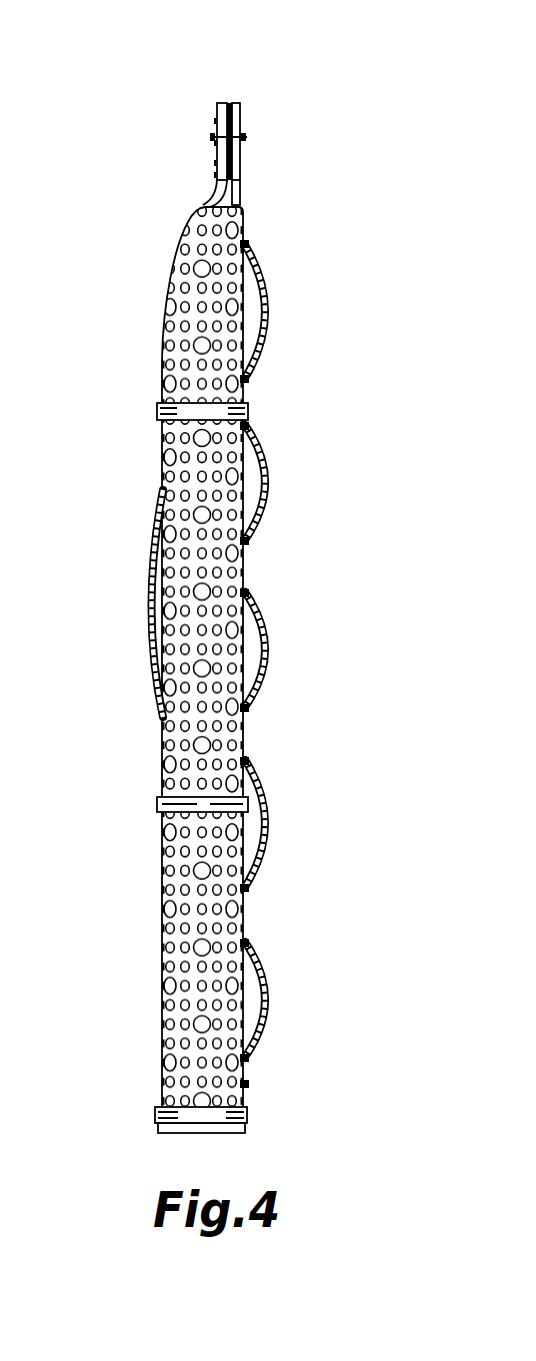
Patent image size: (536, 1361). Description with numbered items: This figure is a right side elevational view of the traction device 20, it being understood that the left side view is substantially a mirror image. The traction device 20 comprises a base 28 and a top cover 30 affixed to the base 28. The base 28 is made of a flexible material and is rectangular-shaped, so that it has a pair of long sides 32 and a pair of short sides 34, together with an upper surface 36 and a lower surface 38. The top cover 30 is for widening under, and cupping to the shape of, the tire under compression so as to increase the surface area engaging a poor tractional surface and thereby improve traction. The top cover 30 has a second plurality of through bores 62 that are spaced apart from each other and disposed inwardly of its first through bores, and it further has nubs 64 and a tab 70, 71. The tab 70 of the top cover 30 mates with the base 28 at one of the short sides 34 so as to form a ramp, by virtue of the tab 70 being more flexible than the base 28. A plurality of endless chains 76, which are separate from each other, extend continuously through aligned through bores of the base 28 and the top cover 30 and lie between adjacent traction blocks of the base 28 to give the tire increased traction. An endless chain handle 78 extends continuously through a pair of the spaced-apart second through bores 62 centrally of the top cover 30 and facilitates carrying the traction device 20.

The traction device 20 is at (56, 419).
The base 28 is at (245, 117).
The top cover 30 is at (159, 315).
The long sides 32 is at (247, 192).
The short sides 34 is at (232, 100).
The upper surface 36 is at (226, 182).
The lower surface 38 is at (247, 158).
The second plurality of through bores 62 is at (197, 440).
The nubs 64 is at (161, 745).
The tab 70 is at (208, 126).
The nut 71 is at (243, 137).
The plurality of endless chains 76 is at (270, 485).
The endless chain handle 78 is at (149, 598).